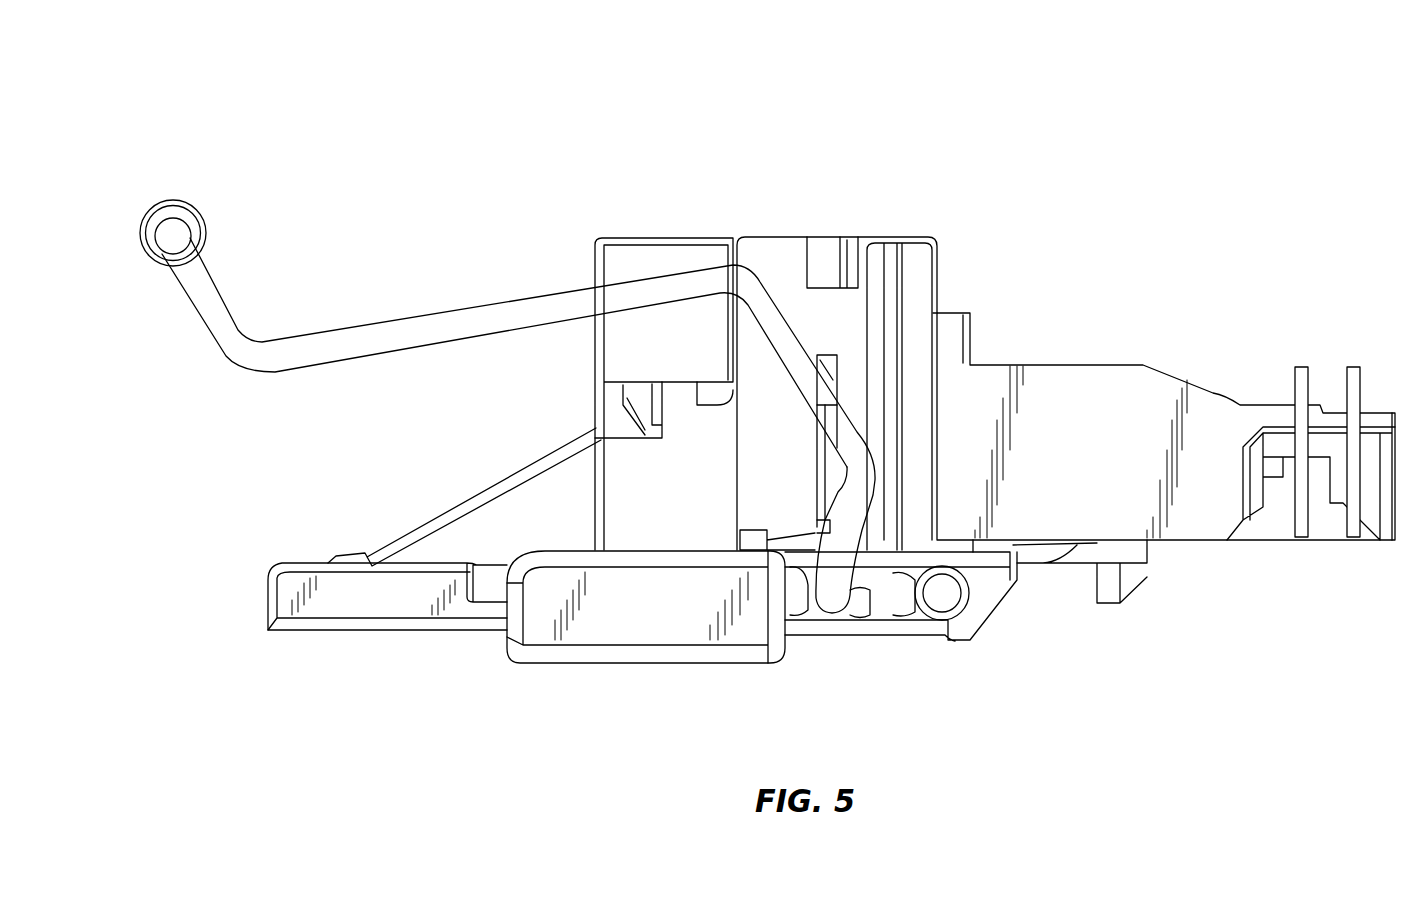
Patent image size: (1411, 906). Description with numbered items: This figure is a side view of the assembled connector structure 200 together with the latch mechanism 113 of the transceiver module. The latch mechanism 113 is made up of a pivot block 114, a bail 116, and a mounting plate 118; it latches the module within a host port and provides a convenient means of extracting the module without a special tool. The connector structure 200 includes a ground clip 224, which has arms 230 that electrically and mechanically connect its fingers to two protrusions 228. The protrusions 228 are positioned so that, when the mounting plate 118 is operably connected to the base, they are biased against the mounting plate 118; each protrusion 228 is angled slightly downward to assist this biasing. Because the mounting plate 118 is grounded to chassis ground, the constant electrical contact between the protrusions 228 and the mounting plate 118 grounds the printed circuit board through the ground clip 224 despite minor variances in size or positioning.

The connector structure 200 is at (1113, 228).
The ground clip 224 is at (835, 354).
The arms 230 is at (823, 490).
The protrusions 228 is at (768, 540).
The latch mechanism 113 is at (77, 420).
The bail 116 is at (212, 306).
The mounting plate 118 is at (517, 635).
The pivot block 114 is at (827, 618).